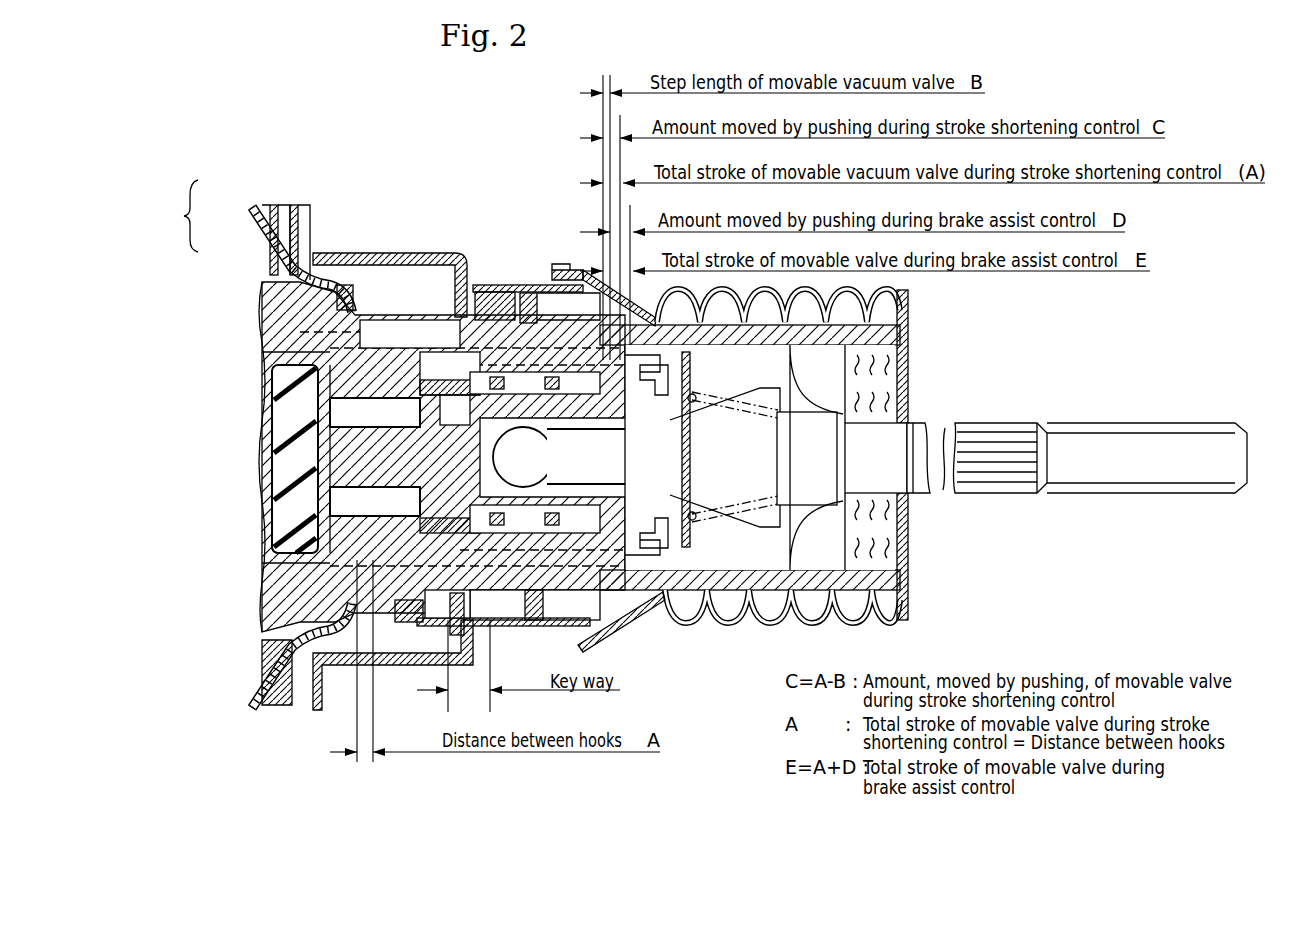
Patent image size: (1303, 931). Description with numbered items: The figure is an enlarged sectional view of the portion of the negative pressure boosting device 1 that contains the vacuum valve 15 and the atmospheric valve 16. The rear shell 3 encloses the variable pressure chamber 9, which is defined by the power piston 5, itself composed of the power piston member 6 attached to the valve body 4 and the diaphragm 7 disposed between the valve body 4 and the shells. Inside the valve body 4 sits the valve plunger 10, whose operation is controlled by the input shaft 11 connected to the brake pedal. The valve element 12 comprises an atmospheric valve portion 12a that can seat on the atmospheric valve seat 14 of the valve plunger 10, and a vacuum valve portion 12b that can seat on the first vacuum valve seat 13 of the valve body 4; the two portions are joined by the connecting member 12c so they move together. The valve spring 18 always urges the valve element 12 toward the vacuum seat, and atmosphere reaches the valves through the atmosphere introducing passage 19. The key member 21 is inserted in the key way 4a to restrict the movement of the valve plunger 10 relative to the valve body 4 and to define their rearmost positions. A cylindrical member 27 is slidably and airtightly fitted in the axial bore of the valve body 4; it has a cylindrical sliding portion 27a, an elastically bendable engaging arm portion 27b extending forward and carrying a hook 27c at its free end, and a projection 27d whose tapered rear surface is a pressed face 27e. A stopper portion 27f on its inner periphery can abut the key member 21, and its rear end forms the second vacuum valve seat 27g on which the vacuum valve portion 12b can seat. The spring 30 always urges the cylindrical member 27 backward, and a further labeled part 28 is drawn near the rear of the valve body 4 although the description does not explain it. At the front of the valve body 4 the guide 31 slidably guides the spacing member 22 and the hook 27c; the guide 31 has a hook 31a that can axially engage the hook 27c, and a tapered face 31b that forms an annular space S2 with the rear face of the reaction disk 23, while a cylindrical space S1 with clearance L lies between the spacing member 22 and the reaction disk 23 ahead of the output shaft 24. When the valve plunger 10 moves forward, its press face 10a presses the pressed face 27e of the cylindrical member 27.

The negative pressure boosting device 1 is at (348, 178).
The rear shell 3 is at (409, 256).
The valve body 4 is at (557, 270).
The key way 4a is at (508, 644).
The power piston 5 is at (214, 398).
The power piston member 6 is at (268, 250).
The diaphragm 7 is at (262, 220).
The variable pressure chamber 9 is at (429, 295).
The valve plunger 10 is at (456, 378).
The press face 10a is at (504, 624).
The input shaft 11 is at (891, 468).
The valve element 12 is at (739, 399).
The atmospheric valve portion 12a is at (738, 597).
The vacuum valve portion 12b is at (664, 631).
The connecting member 12c is at (650, 595).
The first vacuum valve seat 13 is at (624, 603).
The atmospheric valve seat 14 is at (712, 599).
The vacuum valve 15 is at (692, 639).
The atmospheric valve 16 is at (771, 649).
The valve spring 18 is at (699, 411).
The atmosphere introducing passage 19 is at (705, 529).
The key member 21 is at (443, 651).
The spacing member 22 is at (284, 435).
The reaction disk 23 is at (302, 539).
The output shaft 24 is at (300, 461).
The cylindrical member 27 is at (509, 300).
The cylindrical sliding portion 27a is at (584, 397).
The engaging arm portion 27b is at (461, 627).
The hook 27c is at (300, 618).
The projection 27d is at (377, 599).
The pressed face 27e is at (391, 587).
The stopper portion 27f is at (452, 364).
The second vacuum valve seat 27g is at (635, 529).
The retaining ring 28 is at (586, 272).
The spring 30 is at (500, 288).
The guide 31 is at (352, 392).
The hook 31a is at (361, 369).
The tapered face 31b is at (290, 580).
The clearance L is at (300, 499).
The cylindrical space S1 is at (272, 417).
The annular space S2 is at (270, 387).